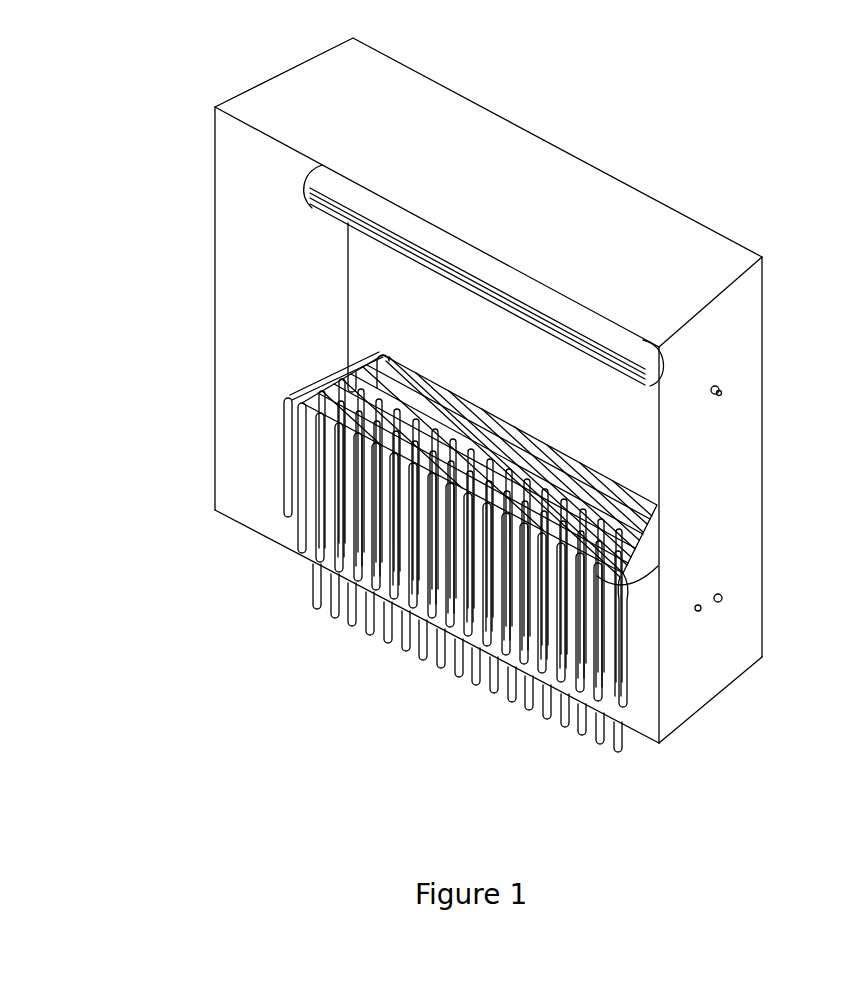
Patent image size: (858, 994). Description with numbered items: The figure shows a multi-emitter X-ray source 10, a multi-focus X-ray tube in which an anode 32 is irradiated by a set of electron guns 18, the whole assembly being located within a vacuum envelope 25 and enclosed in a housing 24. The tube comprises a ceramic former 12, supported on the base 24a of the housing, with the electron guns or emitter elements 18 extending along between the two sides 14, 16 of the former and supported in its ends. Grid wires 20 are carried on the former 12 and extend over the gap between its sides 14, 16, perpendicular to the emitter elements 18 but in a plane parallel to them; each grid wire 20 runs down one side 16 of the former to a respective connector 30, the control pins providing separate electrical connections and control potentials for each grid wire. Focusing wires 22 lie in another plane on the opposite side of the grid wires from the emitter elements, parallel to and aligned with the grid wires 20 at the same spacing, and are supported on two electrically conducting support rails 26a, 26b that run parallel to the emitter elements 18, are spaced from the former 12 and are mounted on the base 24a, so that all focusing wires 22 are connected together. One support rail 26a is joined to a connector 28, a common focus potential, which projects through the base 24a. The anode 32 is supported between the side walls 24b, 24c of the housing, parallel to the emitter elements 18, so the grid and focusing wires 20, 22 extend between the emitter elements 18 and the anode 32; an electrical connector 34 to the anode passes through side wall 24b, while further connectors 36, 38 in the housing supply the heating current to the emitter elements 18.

The multi-emitter X-ray source 10 is at (483, 430).
The ceramic former 12 is at (648, 677).
The side of the former 14 is at (447, 600).
The side of the former 16 is at (508, 470).
The electron guns 18 is at (662, 566).
The grid wires 20 is at (577, 626).
The focusing wires 22 is at (370, 388).
The housing 24 is at (483, 399).
The base of the housing 24a is at (262, 525).
The side wall of the housing 24b is at (752, 500).
The side wall of the housing 24c is at (235, 333).
The vacuum envelope 25 is at (524, 212).
The support rail 26a is at (268, 395).
The support rail 26b is at (400, 362).
The connector 28 is at (626, 745).
The control pins 30 is at (462, 693).
The anode 32 is at (636, 345).
The electrical connector to the anode 34 is at (716, 392).
The connector 36 is at (702, 608).
The connector 38 is at (722, 596).